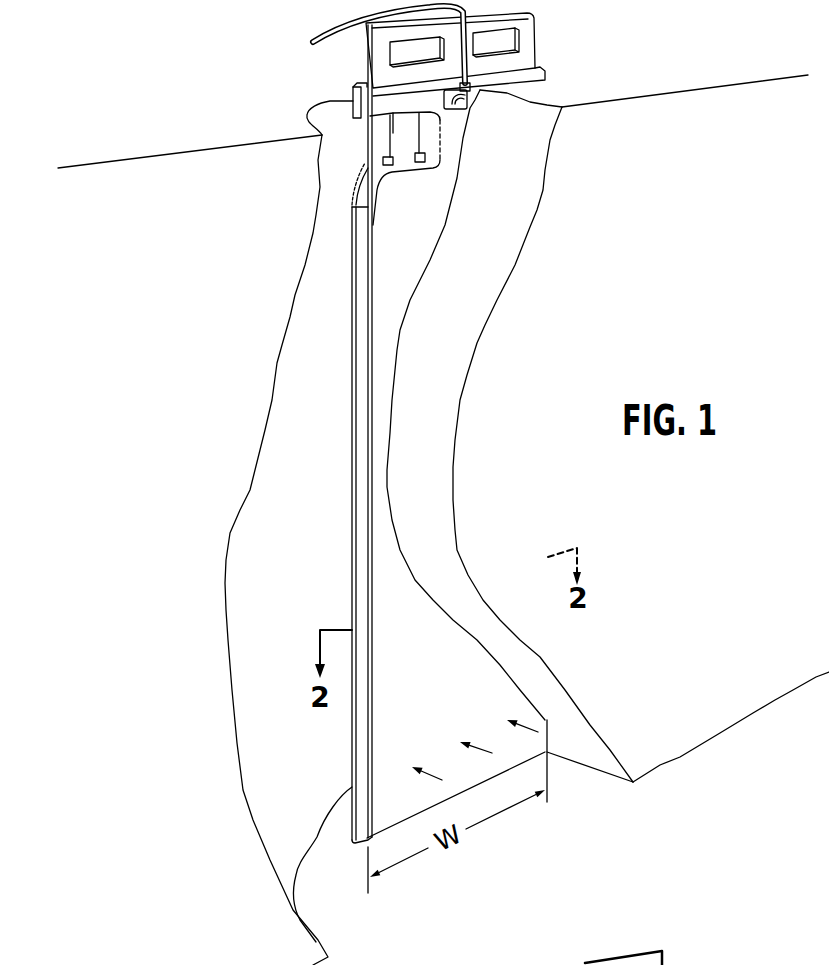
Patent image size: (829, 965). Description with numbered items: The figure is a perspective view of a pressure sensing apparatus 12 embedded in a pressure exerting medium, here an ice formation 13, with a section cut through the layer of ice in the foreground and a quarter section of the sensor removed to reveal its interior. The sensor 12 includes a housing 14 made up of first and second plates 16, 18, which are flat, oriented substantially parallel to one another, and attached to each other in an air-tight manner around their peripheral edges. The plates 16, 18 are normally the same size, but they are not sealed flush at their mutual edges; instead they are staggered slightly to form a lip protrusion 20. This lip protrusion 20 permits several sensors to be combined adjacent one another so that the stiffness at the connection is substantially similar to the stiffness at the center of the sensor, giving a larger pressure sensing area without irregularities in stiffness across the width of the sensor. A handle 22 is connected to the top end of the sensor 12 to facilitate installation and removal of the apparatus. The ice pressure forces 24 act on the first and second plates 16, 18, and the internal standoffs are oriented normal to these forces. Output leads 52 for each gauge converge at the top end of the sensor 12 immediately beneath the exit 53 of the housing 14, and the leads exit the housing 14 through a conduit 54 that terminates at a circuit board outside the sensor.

The pressure sensing apparatus 12 is at (334, 73).
The ice formation 13 is at (148, 157).
The housing 14 is at (561, 753).
The first plate 16 is at (523, 758).
The second plate 18 is at (352, 733).
The lip protrusion 20 is at (353, 842).
The handle 22 is at (538, 17).
The ice pressure forces 24 is at (481, 746).
The output leads 52 is at (393, 133).
The exit 53 is at (457, 113).
The conduit 54 is at (328, 33).